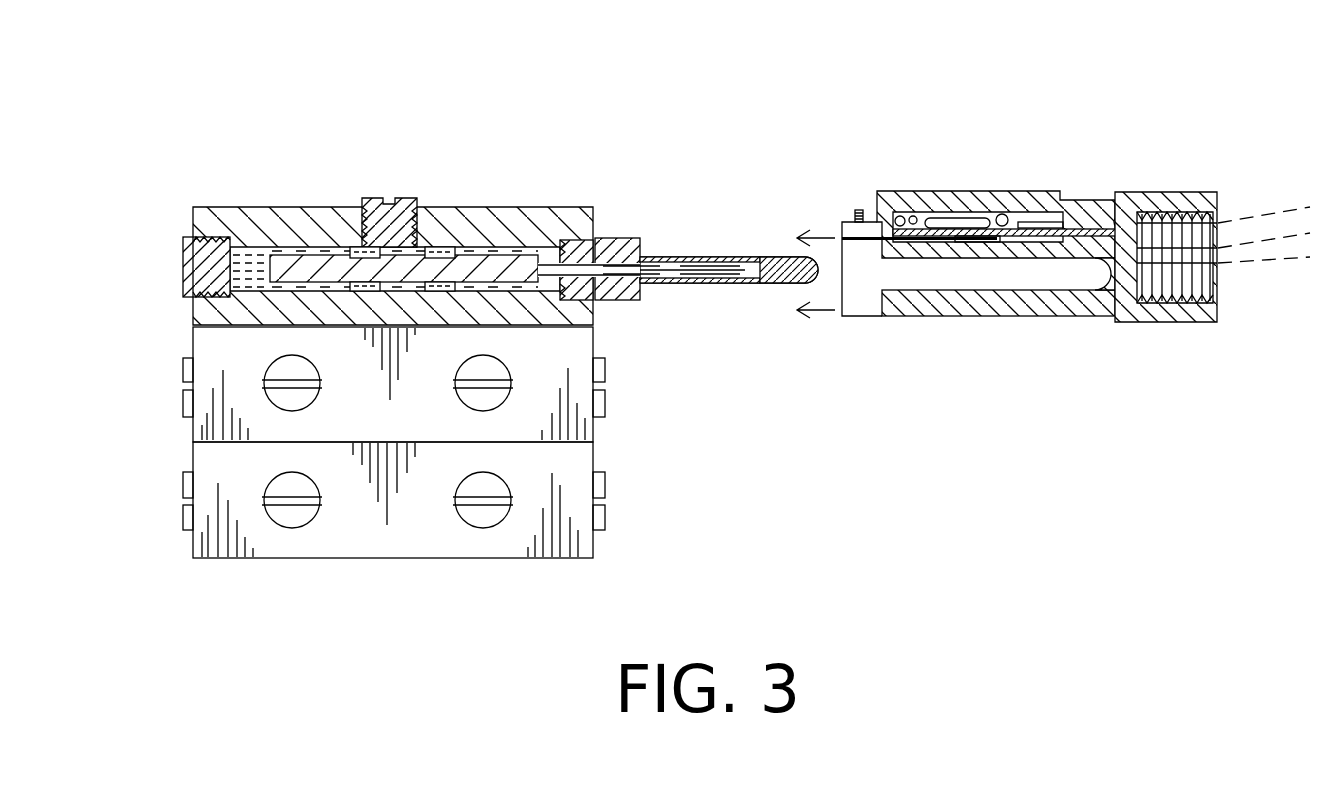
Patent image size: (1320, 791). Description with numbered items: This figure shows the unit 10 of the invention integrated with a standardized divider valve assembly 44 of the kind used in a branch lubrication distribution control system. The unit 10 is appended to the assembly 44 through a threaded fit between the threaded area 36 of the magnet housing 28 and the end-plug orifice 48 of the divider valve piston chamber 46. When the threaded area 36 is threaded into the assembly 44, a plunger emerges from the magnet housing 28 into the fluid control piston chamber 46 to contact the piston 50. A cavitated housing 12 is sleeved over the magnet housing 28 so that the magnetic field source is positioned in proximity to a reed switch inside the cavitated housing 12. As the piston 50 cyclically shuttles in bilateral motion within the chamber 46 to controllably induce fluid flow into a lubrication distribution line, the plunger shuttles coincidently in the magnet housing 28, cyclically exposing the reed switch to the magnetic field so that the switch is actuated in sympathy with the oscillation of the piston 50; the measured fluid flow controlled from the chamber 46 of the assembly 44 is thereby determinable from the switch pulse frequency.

The unit 10 is at (1053, 172).
The cavitated housing 12 is at (1165, 195).
The magnet housing 28 is at (628, 300).
The threaded area 36 is at (578, 245).
The divider valve assembly 44 is at (445, 550).
The piston chamber 46 is at (445, 252).
The end-plug orifice 48 is at (593, 302).
The piston 50 is at (304, 267).